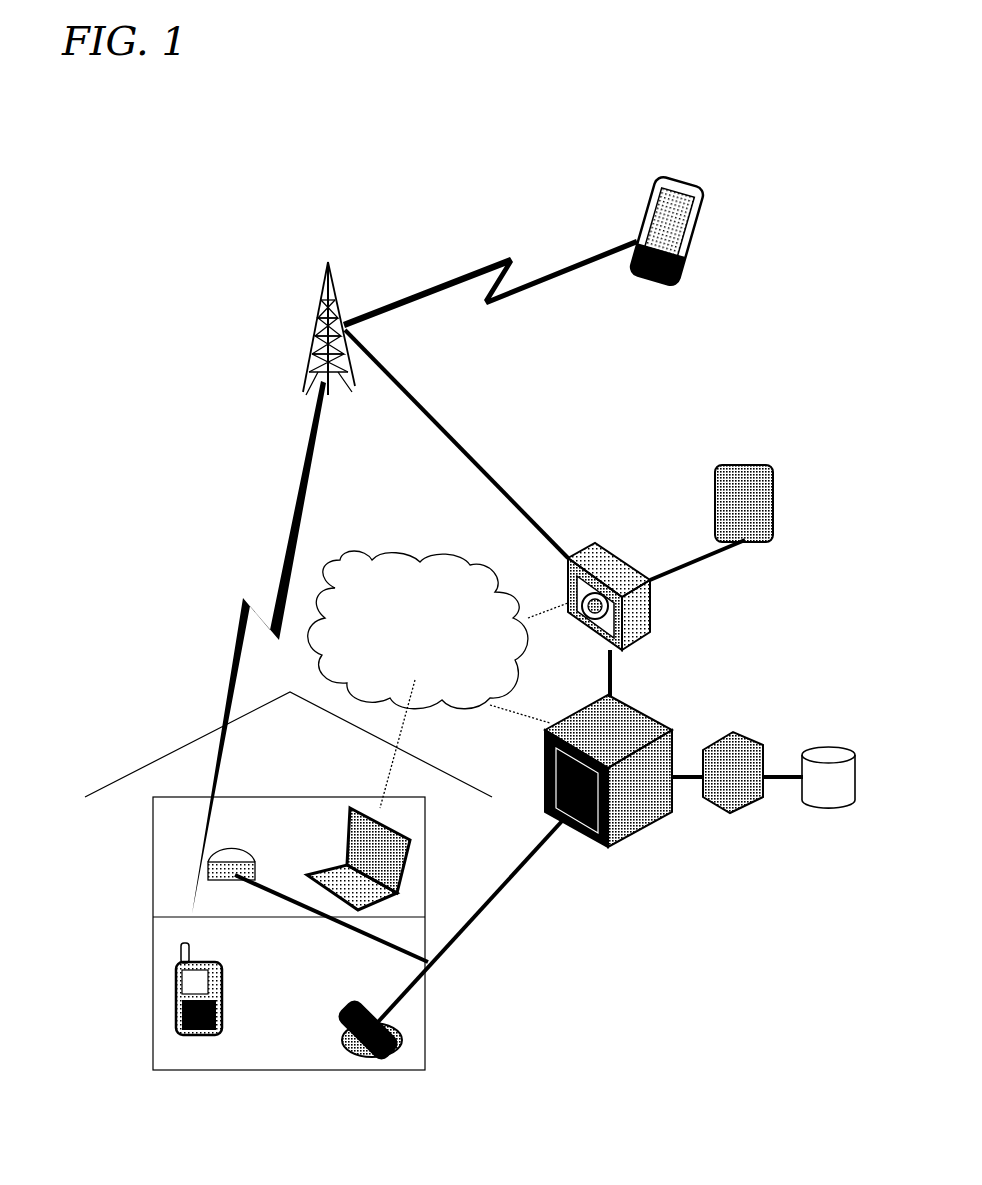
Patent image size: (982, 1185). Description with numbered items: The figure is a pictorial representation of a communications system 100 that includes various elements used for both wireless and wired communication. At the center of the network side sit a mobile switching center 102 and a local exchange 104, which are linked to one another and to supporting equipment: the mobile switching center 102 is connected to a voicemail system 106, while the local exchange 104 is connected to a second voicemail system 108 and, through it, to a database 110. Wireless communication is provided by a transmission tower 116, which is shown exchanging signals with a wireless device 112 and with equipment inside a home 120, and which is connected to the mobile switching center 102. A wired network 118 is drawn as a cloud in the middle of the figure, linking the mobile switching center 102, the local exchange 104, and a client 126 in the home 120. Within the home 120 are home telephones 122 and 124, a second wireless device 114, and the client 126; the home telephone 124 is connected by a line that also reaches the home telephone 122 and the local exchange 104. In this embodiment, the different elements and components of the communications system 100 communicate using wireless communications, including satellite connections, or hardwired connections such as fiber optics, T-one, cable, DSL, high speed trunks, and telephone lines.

The communications system 100 is at (153, 186).
The mobile switching center 102 is at (595, 545).
The local exchange 104 is at (612, 850).
The voicemail system 106 is at (735, 492).
The voicemail system 108 is at (755, 806).
The database 110 is at (805, 757).
The wireless device 112 is at (693, 203).
The wireless device 114 is at (178, 1026).
The transmission tower 116 is at (312, 352).
The wired network 118 is at (404, 655).
The home 120 is at (148, 748).
The home telephone 122 is at (403, 1043).
The home telephone 124 is at (222, 878).
The client 126 is at (418, 873).